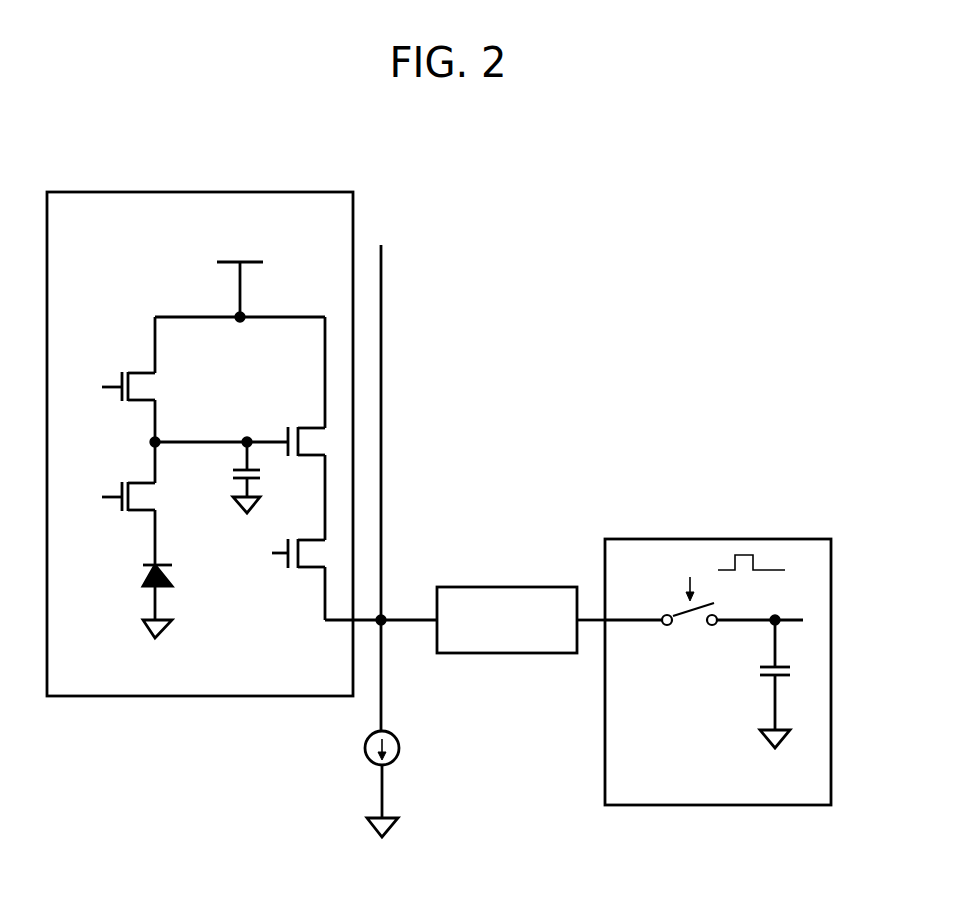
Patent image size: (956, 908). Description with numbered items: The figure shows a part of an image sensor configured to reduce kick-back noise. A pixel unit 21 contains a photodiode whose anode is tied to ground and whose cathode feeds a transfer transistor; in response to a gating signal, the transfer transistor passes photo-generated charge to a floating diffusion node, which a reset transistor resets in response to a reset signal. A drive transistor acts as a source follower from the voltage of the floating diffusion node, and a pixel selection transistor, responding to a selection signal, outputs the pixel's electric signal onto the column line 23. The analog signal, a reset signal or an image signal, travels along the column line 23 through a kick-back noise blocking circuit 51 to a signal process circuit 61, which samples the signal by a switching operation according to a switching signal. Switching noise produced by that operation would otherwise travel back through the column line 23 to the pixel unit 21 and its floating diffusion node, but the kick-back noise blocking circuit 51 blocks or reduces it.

The pixel unit 21 is at (197, 191).
The column line 23 is at (383, 494).
The kick-back noise blocking circuit 51 is at (508, 586).
The signal process circuit 61 is at (720, 538).